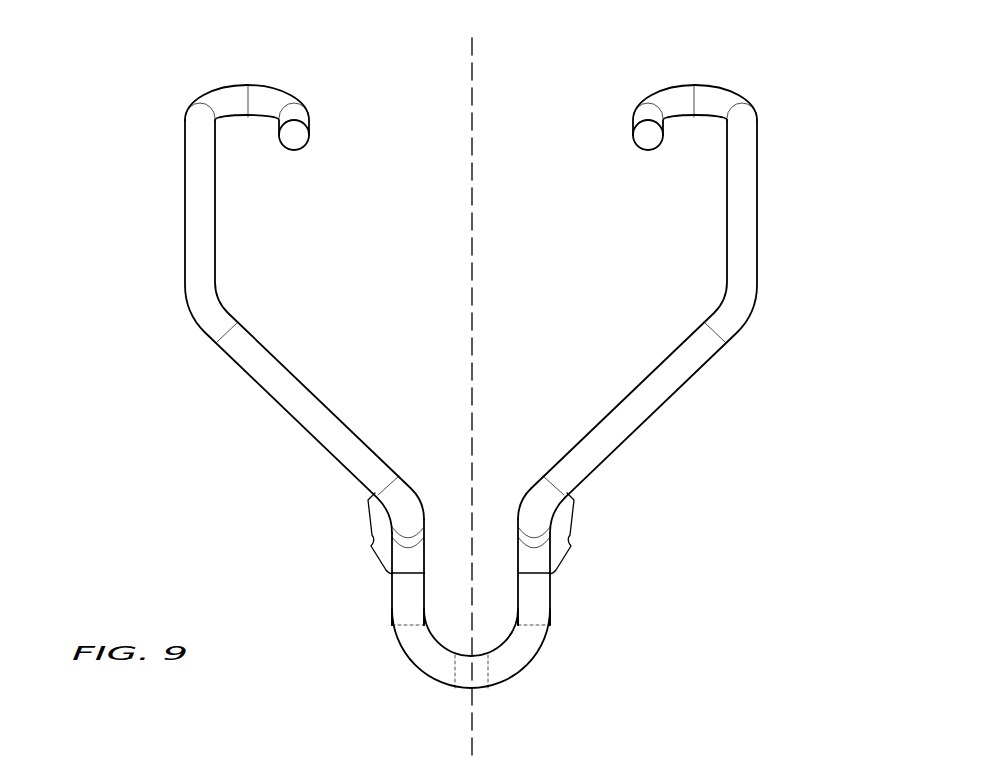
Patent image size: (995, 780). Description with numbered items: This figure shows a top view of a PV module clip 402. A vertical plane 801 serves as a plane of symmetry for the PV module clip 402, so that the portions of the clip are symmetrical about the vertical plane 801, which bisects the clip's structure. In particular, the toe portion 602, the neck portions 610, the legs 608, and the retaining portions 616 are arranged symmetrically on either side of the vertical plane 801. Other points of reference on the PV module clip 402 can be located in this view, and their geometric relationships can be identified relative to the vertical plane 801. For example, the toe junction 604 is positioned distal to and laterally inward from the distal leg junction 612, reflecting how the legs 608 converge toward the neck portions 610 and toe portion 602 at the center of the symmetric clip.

The PV module clip 402 is at (113, 47).
The vertical plane 801 is at (473, 84).
The retaining portions 616 is at (180, 82).
The legs 608 is at (200, 212).
The distal leg junction 612 is at (555, 482).
The neck portions 610 is at (371, 545).
The toe junction 604 is at (535, 574).
The toe portion 602 is at (410, 666).